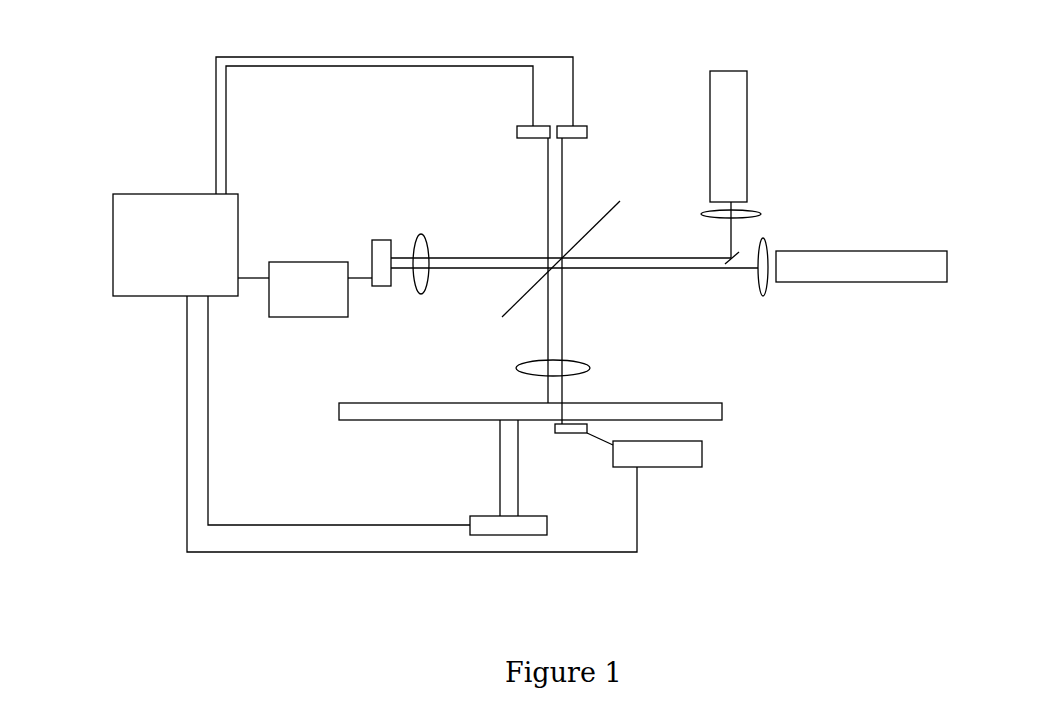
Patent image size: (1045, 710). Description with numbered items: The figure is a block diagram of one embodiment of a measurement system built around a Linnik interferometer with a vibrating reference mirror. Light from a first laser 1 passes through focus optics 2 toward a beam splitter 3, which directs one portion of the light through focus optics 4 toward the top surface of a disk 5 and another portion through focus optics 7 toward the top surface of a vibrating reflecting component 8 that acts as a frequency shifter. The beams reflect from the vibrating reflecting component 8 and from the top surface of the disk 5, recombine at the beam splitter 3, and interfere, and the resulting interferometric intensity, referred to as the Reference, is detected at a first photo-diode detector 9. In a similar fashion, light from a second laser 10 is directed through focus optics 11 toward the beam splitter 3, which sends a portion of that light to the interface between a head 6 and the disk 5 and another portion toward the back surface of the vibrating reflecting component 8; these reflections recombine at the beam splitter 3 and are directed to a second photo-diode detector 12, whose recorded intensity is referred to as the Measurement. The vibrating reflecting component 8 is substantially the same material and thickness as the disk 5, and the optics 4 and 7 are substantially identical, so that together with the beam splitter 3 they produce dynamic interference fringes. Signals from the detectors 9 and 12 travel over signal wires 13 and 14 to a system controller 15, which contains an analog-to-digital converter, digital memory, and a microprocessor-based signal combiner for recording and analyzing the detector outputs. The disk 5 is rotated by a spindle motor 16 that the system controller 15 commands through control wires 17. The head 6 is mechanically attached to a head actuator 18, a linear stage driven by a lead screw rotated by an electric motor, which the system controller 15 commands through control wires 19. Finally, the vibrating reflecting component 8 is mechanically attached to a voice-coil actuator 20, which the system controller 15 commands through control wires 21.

The first laser 1 is at (858, 289).
The focus optics 2 is at (768, 303).
The beam splitter 3 is at (532, 272).
The focus optics 4 is at (597, 366).
The disk 5 is at (375, 426).
The head 6 is at (570, 437).
The focus optics 7 is at (422, 235).
The vibrating reflecting component 8 is at (370, 252).
The first photo-diode detector 9 is at (512, 124).
The second laser 10 is at (757, 96).
The focus optics 11 is at (757, 208).
The second photo-diode detector 12 is at (578, 121).
The signal wire 13 is at (525, 54).
The signal wire 14 is at (383, 70).
The system controller 15 is at (110, 243).
The spindle motor 16 is at (475, 515).
The control wires 17 is at (213, 430).
The head actuator 18 is at (705, 455).
The control wires 19 is at (183, 470).
The voice-coil actuator 20 is at (300, 320).
The control wires 21 is at (253, 273).